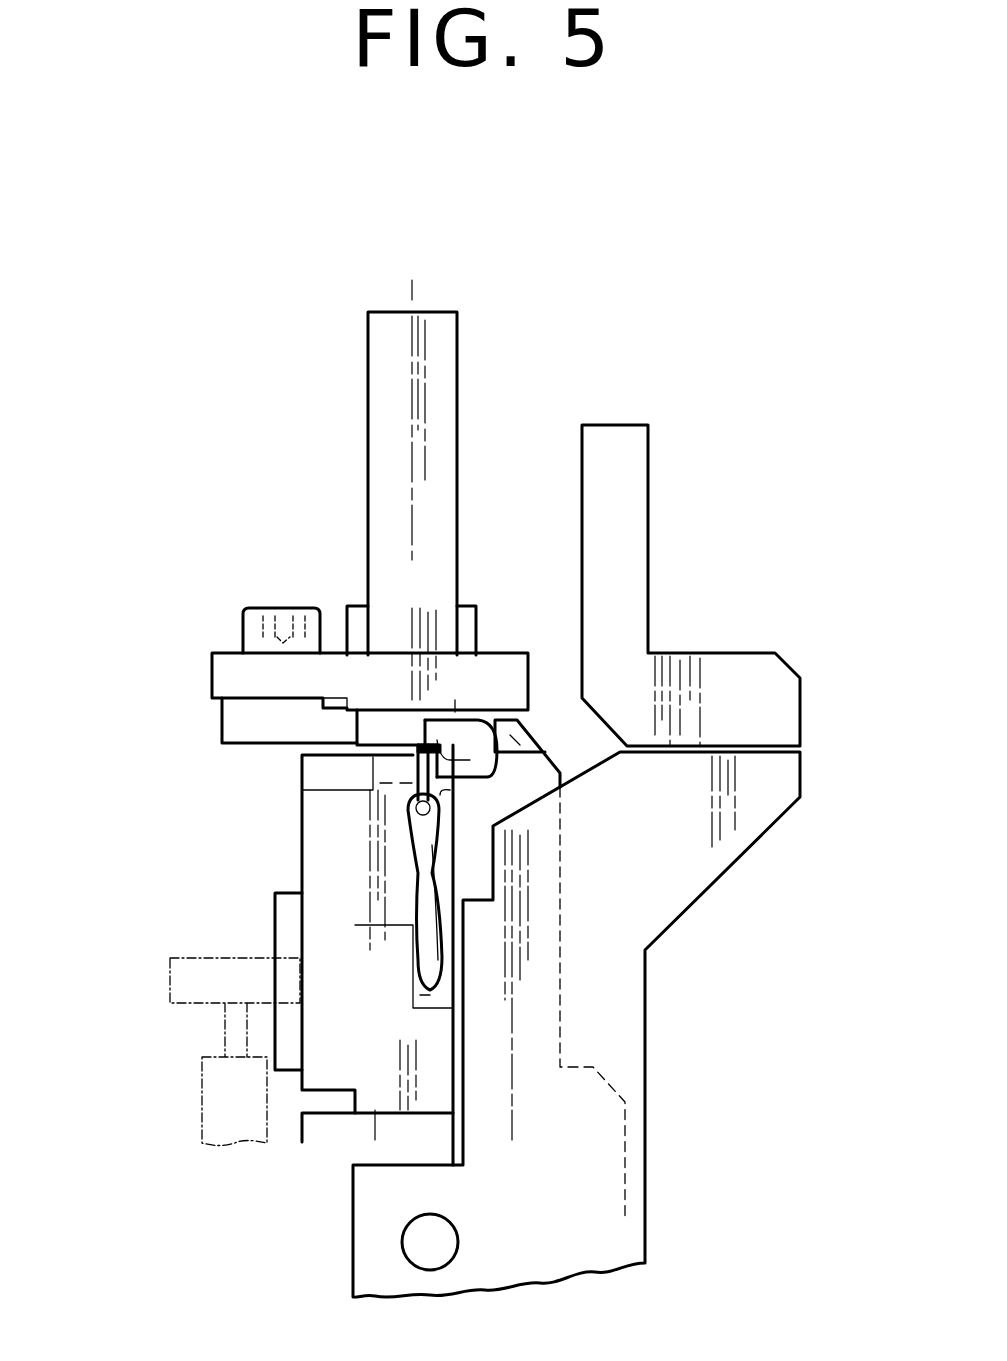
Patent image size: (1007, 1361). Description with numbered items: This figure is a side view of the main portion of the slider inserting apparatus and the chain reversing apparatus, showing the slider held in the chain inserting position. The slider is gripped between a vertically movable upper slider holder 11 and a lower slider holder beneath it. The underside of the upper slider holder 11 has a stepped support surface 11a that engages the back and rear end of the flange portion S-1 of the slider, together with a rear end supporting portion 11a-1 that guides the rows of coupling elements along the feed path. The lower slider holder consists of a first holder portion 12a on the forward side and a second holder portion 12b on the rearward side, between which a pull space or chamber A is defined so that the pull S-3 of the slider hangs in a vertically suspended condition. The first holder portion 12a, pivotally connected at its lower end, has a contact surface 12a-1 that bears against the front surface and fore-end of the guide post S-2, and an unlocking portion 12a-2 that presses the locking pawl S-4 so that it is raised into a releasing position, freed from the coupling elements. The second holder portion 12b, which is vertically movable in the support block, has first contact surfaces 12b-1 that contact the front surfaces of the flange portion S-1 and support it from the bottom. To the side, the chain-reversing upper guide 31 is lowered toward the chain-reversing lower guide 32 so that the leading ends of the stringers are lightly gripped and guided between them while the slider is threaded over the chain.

The upper slider holder 11 is at (472, 430).
The stepped support surface 11a is at (372, 717).
The rear end supporting portion 11a-1 is at (233, 728).
The chain-reversing upper guide 31 is at (625, 467).
The chain-reversing lower guide 32 is at (760, 794).
The first holder portion 12a is at (560, 752).
The contact surface 12a-1 is at (473, 743).
The unlocking portion 12a-2 is at (450, 792).
The second holder portion 12b is at (292, 840).
The first contact surfaces 12b-1 is at (420, 745).
The flange portion S-1 is at (465, 712).
The guide post S-2 is at (520, 743).
The pull S-3 is at (423, 890).
The locking pawl S-4 is at (407, 748).
The pull space or chamber A is at (427, 997).